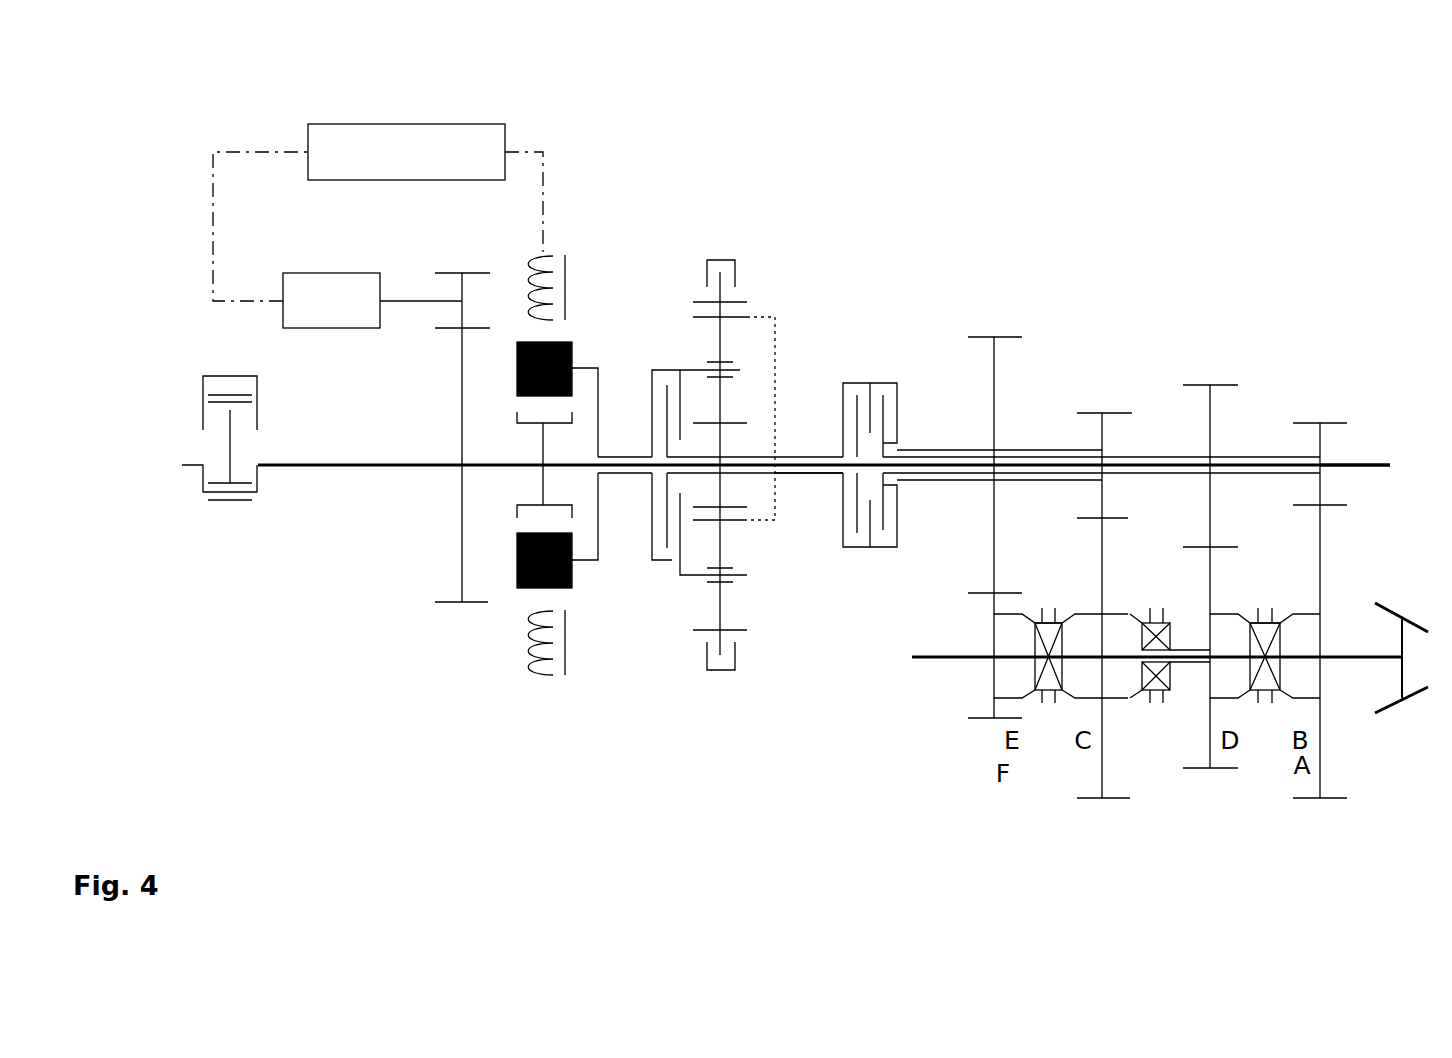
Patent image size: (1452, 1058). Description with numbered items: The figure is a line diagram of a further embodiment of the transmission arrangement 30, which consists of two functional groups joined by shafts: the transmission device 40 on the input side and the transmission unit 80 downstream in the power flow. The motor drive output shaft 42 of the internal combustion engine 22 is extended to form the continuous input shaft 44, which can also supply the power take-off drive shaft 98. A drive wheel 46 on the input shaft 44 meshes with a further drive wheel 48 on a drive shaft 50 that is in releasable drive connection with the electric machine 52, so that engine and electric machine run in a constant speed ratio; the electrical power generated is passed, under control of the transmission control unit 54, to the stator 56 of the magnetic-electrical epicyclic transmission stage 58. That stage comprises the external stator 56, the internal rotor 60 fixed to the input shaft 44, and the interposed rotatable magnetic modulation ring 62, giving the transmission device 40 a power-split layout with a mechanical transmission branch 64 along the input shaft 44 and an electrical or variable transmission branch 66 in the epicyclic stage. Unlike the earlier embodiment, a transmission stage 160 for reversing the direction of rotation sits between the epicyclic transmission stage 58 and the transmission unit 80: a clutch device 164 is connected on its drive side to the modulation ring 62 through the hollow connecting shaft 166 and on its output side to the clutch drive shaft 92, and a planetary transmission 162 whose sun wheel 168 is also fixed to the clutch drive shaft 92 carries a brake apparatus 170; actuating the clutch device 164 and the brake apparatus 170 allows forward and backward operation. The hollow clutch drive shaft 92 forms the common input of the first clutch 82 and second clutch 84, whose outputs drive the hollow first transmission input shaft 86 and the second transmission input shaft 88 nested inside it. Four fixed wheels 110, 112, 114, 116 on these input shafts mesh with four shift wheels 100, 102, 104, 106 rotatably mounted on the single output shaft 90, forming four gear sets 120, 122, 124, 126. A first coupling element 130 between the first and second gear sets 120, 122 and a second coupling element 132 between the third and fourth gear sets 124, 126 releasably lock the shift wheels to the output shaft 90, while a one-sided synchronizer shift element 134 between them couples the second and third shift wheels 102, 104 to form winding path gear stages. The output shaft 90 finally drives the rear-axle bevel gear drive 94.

The internal combustion engine 22 is at (200, 477).
The transmission arrangement 30 is at (928, 178).
The transmission device 40 is at (652, 238).
The motor drive output shaft 42 is at (283, 467).
The input shaft 44 is at (395, 467).
The drive wheel 46 is at (452, 605).
The further drive wheel 48 is at (450, 272).
The drive shaft 50 is at (410, 300).
The electric machine 52 is at (331, 300).
The transmission control unit 54 is at (406, 152).
The stator 56 is at (563, 253).
The magnetic-electrical epicyclic transmission stage 58 is at (593, 328).
The internal rotor 60 is at (517, 510).
The magnetic modulation ring 62 is at (572, 360).
The mechanical transmission branch 64 is at (500, 462).
The electrical or variable transmission branch 66 is at (548, 190).
The transmission unit 80 is at (1147, 220).
The first clutch 82 is at (890, 548).
The second clutch 84 is at (853, 548).
The first transmission input shaft 86 is at (908, 450).
The second transmission input shaft 88 is at (943, 460).
The output shaft 90 is at (1340, 657).
The clutch drive shaft 92 is at (815, 472).
The rear-axle bevel gear drive 94 is at (1417, 633).
The power take-off drive shaft 98 is at (1365, 462).
The first shift wheel 100 is at (983, 720).
The second shift wheel 102 is at (1092, 800).
The third shift wheel 104 is at (1205, 770).
The fourth shift wheel 106 is at (1313, 800).
The first fixed wheel 110 is at (1012, 335).
The second fixed wheel 112 is at (1108, 412).
The third fixed wheel 114 is at (1222, 383).
The fourth fixed wheel 116 is at (1328, 420).
The first gear set 120 is at (993, 305).
The second gear set 122 is at (1102, 305).
The third gear set 124 is at (1207, 300).
The fourth gear set 126 is at (1314, 305).
The first coupling element 130 is at (1045, 583).
The second coupling element 132 is at (1265, 583).
The shift element 134 is at (1157, 583).
The transmission stage 160 is at (727, 238).
The planetary transmission 162 is at (752, 293).
The clutch device 164 is at (663, 563).
The connecting shaft 166 is at (637, 473).
The sun wheel 168 is at (723, 443).
The brake apparatus 170 is at (728, 258).